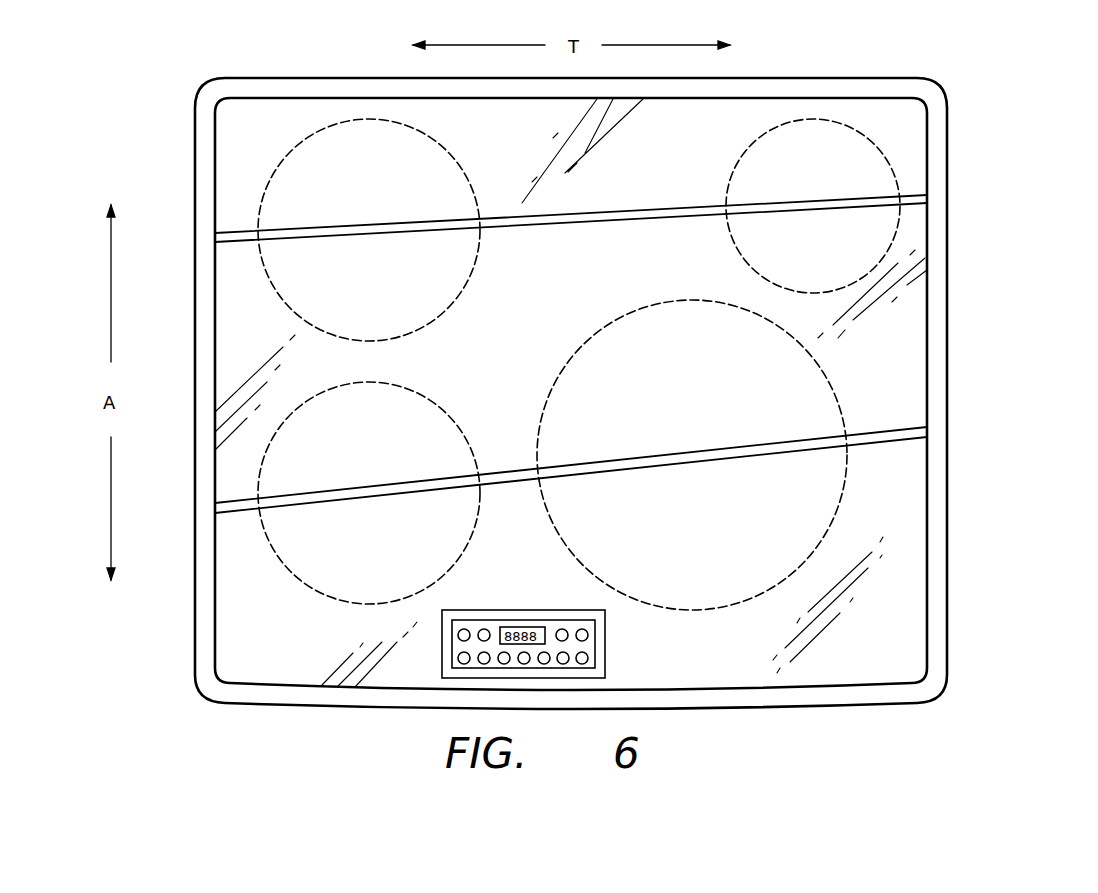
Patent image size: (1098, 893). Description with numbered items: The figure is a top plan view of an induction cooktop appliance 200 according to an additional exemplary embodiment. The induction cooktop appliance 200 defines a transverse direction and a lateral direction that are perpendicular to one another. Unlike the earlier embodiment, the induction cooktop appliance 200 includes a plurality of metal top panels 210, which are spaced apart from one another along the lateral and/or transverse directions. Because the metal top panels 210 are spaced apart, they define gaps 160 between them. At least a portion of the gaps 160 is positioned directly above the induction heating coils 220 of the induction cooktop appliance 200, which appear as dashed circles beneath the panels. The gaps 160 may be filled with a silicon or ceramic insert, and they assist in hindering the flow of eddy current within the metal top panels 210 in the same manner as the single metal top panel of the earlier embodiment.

The induction cooktop appliance 200 is at (1010, 204).
The metal top panels 210 is at (910, 140).
The gaps 160 is at (580, 224).
The induction heating coils 220 is at (455, 153).